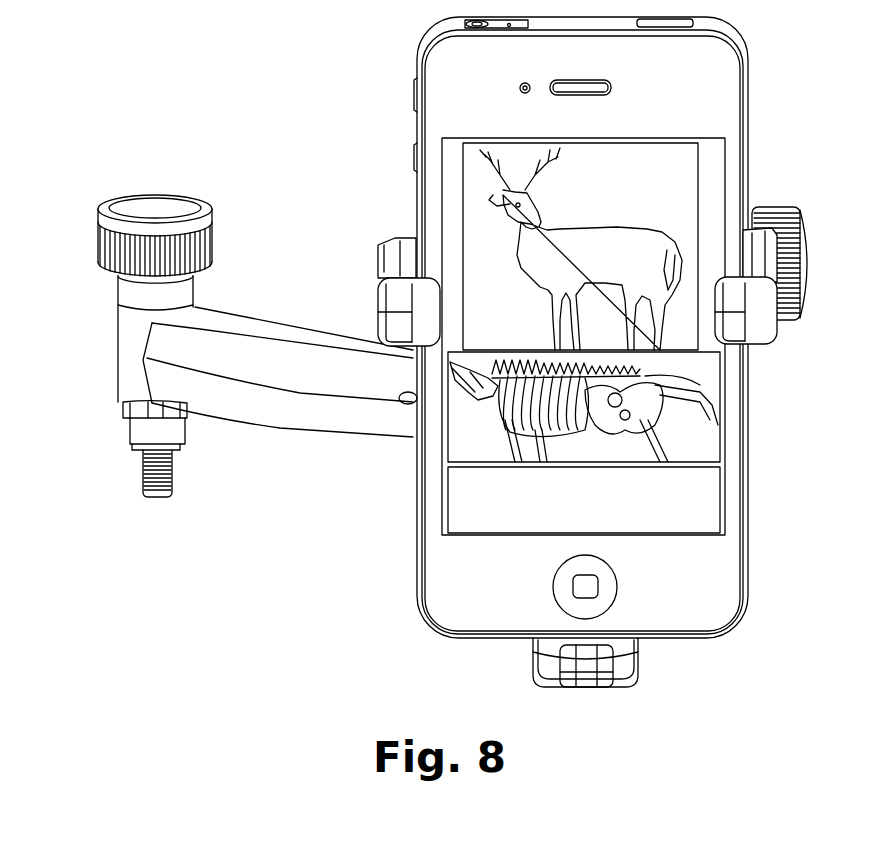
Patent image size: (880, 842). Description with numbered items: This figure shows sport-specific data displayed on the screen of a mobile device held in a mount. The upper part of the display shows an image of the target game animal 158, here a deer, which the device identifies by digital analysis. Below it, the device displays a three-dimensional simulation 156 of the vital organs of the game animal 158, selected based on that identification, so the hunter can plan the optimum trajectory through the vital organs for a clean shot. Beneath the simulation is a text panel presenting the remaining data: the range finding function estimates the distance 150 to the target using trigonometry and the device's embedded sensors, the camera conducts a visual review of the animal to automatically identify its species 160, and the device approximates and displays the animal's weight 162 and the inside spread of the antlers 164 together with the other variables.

The distance 150 is at (458, 482).
The 3D simulation 156 is at (683, 385).
The game animal 158 is at (626, 224).
The species 160 is at (680, 484).
The weight 162 is at (457, 504).
The inside spread of the antlers 164 is at (693, 518).